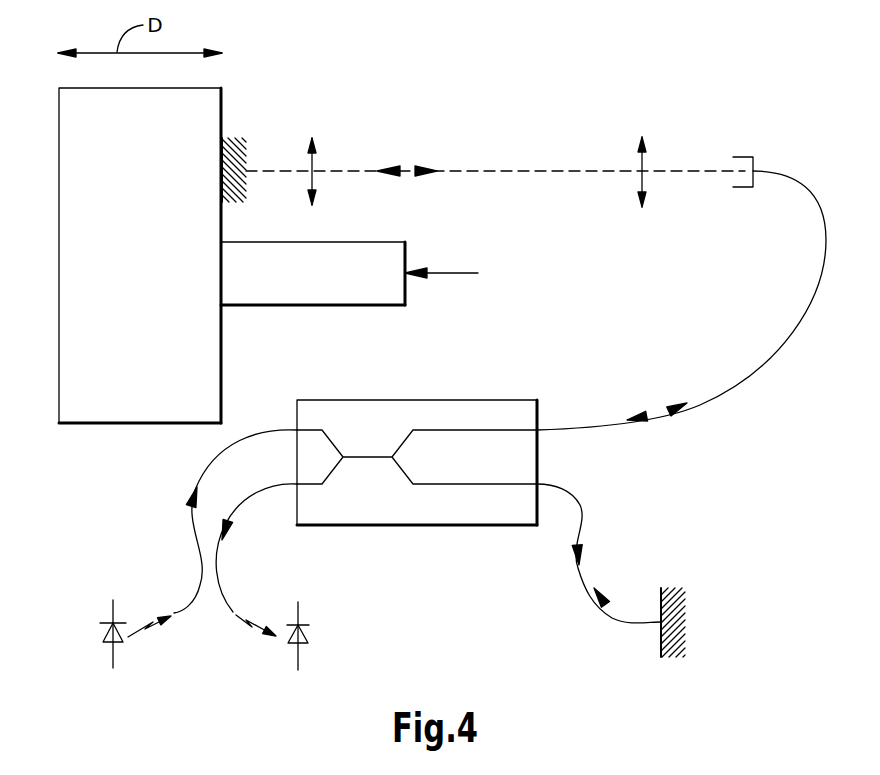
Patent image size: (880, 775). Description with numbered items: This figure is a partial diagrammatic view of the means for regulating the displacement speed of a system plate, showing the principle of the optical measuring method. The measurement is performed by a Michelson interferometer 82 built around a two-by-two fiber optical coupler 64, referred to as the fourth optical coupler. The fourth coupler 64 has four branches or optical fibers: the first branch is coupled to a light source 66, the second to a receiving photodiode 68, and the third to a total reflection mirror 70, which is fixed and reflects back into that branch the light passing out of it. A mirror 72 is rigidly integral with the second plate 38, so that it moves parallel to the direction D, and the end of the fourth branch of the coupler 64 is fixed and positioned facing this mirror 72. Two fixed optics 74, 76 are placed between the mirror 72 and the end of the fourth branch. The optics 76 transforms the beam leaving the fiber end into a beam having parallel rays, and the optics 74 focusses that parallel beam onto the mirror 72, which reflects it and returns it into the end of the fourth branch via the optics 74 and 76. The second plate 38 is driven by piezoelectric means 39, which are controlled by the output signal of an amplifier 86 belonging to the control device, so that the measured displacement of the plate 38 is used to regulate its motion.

The second plate 38 is at (78, 296).
The piezoelectric means 39 is at (333, 246).
The fourth optical coupler 64 is at (418, 410).
The light source 66 is at (99, 637).
The receiving photodiode 68 is at (307, 629).
The total reflection mirror 70 is at (666, 620).
The mirror 72 is at (247, 152).
The optics 74 is at (316, 157).
The optics 76 is at (646, 156).
The Michelson interferometer 82 is at (218, 657).
The amplifier 86 is at (467, 274).